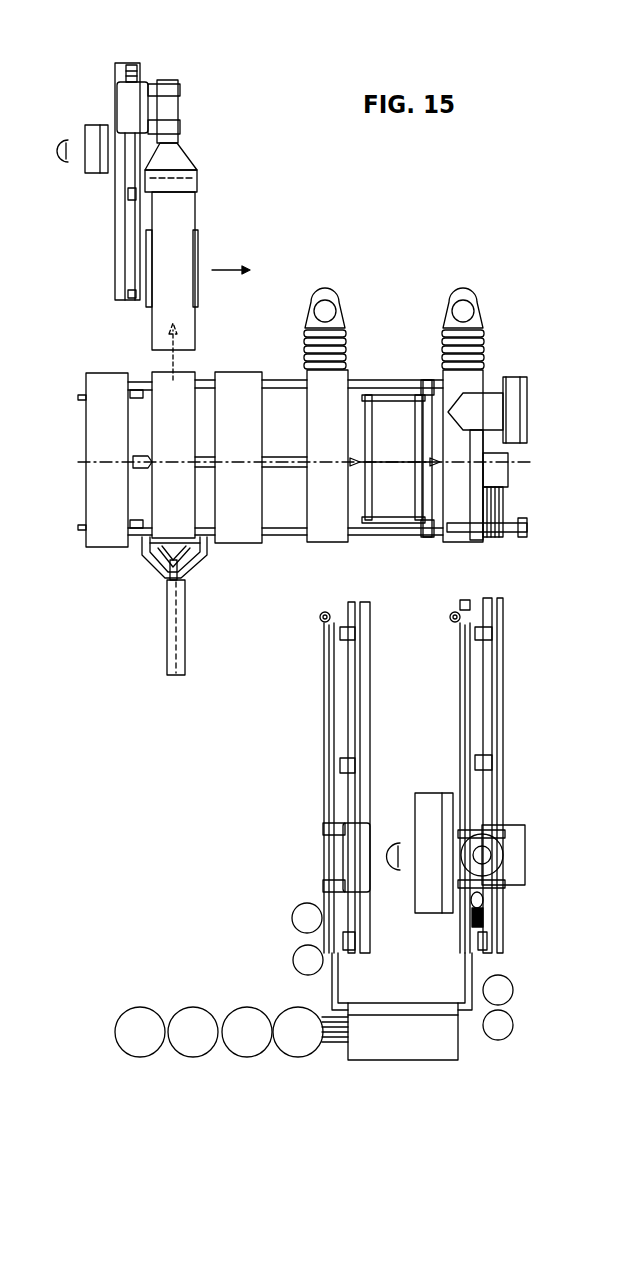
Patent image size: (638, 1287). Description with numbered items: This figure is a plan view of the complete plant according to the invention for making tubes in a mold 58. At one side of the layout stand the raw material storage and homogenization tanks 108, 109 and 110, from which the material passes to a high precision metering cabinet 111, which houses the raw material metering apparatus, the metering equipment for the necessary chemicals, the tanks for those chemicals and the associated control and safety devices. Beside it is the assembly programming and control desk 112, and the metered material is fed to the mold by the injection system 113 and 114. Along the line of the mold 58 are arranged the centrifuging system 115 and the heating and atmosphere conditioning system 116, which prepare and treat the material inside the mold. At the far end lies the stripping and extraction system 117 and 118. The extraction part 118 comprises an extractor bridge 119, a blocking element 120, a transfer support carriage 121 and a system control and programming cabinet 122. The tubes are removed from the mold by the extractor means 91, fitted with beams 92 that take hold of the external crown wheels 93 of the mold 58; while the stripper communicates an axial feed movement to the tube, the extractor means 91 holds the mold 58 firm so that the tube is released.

The mold 58 is at (187, 320).
The extractor means 91 is at (185, 582).
The beams 92 is at (145, 557).
The external crown wheels 93 is at (185, 550).
The raw material storage and homogenization tank 108 is at (147, 1050).
The raw material storage and homogenization tank 109 is at (307, 912).
The raw material storage and homogenization tank 110 is at (503, 990).
The high precision metering cabinet 111 is at (403, 1063).
The assembly programming and control desk 112 is at (433, 813).
The injection system 113 is at (490, 830).
The injection system 114 is at (360, 853).
The centrifuging system 115 is at (488, 403).
The heating and atmosphere conditioning system 116 is at (335, 310).
The stripping and extraction system 117 is at (165, 582).
The stripping and extraction system 118 is at (142, 63).
The extractor bridge 119 is at (120, 105).
The blocking element 120 is at (183, 158).
The transfer support carriage 121 is at (200, 243).
The system control and programming cabinet 122 is at (90, 157).